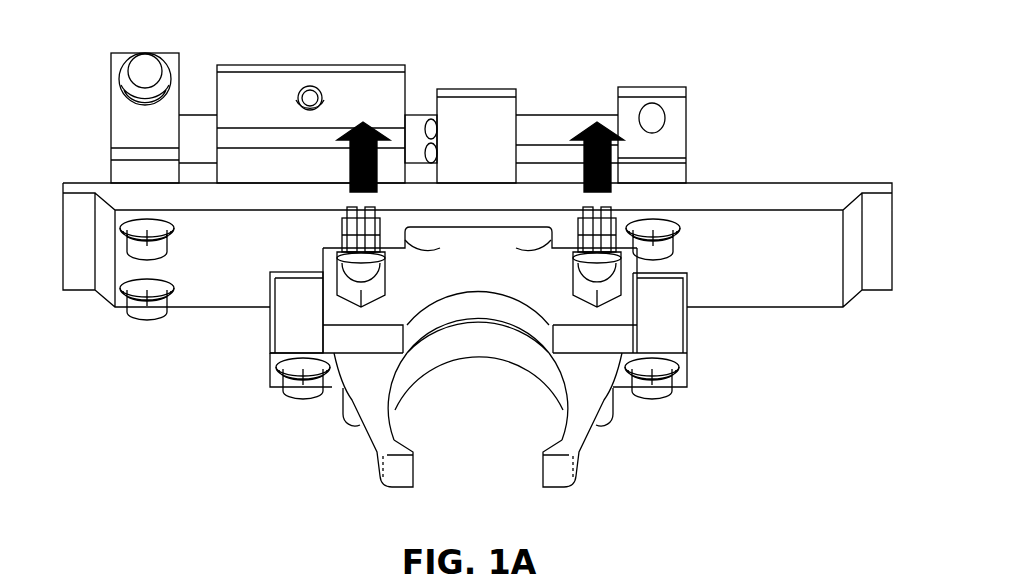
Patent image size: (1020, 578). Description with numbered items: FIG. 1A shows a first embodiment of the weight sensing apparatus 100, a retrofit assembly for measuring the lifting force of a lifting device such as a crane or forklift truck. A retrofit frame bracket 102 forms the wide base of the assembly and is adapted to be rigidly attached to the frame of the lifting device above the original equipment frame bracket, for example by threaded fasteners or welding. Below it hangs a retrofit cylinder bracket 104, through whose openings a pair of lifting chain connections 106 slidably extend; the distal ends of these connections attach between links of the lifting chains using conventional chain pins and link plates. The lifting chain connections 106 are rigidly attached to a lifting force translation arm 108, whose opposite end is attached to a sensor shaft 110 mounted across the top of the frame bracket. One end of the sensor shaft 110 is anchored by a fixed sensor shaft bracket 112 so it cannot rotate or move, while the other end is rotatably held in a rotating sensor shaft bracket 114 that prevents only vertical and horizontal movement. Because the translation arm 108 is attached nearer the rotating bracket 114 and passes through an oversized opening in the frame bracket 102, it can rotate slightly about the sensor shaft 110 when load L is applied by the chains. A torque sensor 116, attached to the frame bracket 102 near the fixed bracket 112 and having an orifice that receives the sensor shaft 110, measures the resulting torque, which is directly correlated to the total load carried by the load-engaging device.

The weight sensing apparatus 100 is at (752, 32).
The retrofit frame bracket 102 is at (770, 255).
The retrofit cylinder bracket 104 is at (393, 447).
The lifting chain connections 106 is at (360, 267).
The lifting force translation arm 108 is at (477, 268).
The sensor shaft 110 is at (562, 127).
The fixed sensor shaft bracket 112 is at (137, 127).
The rotating sensor shaft bracket 114 is at (677, 127).
The torque sensor 116 is at (367, 88).